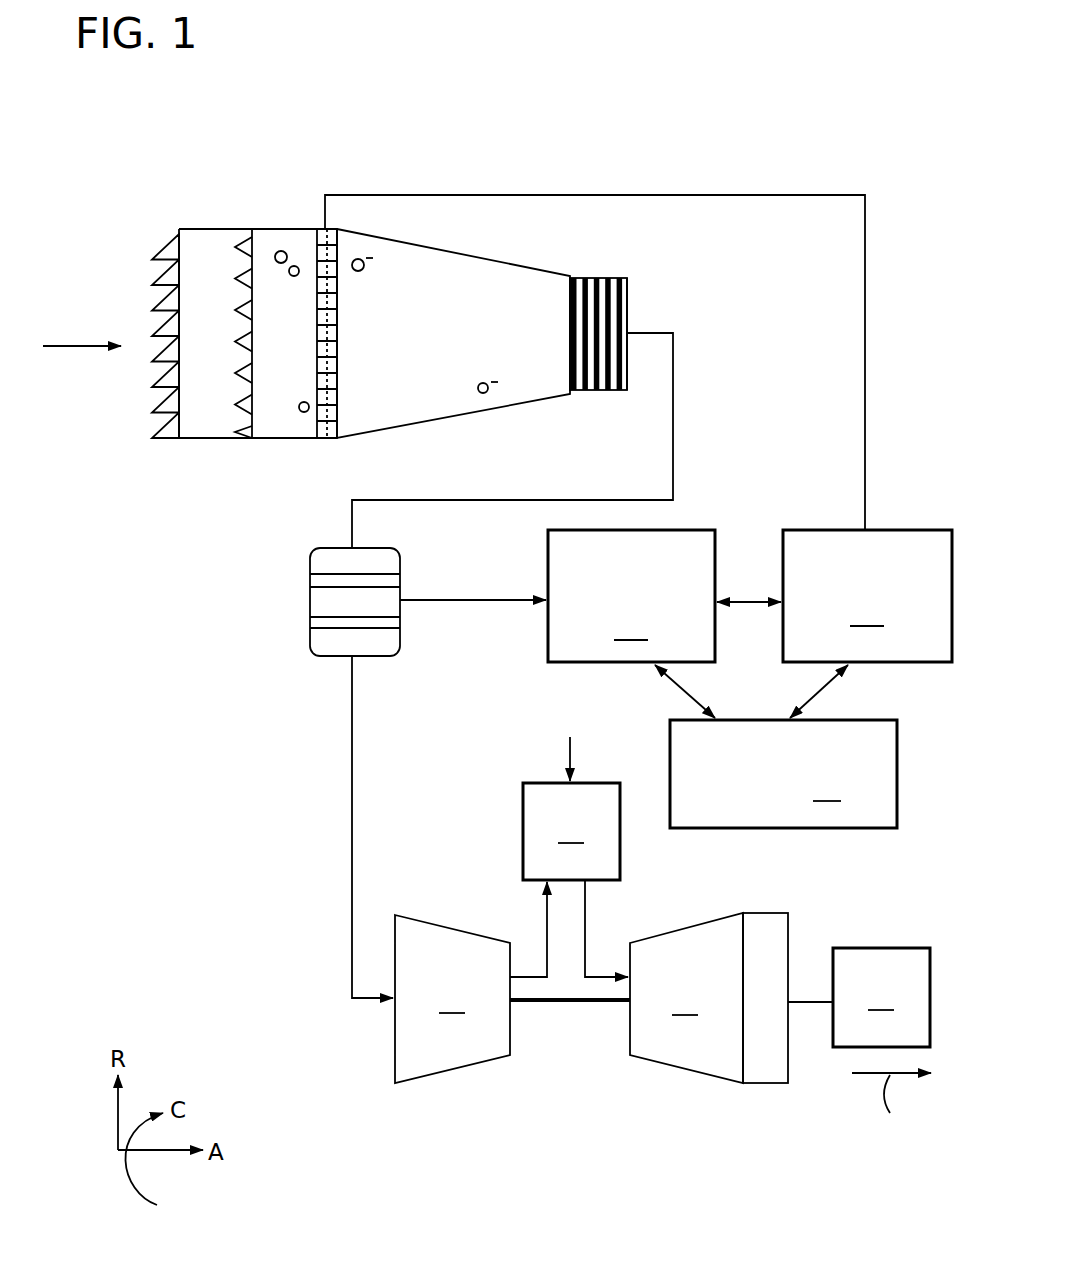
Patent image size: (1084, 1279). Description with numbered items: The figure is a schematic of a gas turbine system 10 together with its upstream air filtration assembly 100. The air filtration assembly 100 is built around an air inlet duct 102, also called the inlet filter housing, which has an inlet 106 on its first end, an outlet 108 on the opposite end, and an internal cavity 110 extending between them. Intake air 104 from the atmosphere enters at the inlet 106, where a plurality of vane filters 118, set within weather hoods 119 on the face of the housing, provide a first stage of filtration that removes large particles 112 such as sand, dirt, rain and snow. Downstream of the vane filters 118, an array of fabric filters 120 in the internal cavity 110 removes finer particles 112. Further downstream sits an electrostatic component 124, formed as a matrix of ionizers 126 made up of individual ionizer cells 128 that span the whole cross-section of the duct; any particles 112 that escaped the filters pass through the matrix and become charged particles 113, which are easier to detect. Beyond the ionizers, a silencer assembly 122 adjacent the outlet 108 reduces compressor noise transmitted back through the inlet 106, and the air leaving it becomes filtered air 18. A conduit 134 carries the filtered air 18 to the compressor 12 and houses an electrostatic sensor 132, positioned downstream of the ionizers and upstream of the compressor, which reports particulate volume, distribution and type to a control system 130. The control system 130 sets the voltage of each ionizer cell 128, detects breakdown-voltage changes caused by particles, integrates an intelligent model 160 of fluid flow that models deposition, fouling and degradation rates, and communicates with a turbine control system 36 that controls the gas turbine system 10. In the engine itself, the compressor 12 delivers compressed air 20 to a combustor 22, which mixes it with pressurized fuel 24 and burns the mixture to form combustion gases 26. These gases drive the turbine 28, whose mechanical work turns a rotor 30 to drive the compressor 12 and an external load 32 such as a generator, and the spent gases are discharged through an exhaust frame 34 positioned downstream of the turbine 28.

The air filtration assembly 100 is at (473, 100).
The air inlet duct 102 is at (220, 229).
The intake air 104 is at (73, 347).
The inlet 106 is at (141, 270).
The outlet 108 is at (639, 304).
The internal cavity 110 is at (473, 351).
The particles 112 is at (280, 251).
The charged particles 113 is at (359, 259).
The vane filters 118 is at (167, 438).
The weather hoods 119 is at (157, 307).
The array of fabric filters 120 is at (243, 437).
The silencer assembly 122 is at (613, 277).
The electrostatic component 124 is at (394, 359).
The matrix of ionizers 126 is at (394, 359).
The ionizer cells 128 is at (320, 438).
The control system 130 is at (867, 624).
The electrostatic sensor 132 is at (310, 625).
The intelligent model 160 is at (664, 624).
The turbine control system 36 is at (783, 774).
The gas turbine system 10 is at (892, 912).
The compressor 12 is at (452, 999).
The filtered air 18 is at (310, 827).
The conduit 134 is at (352, 937).
The compressed air 20 is at (545, 937).
The combustor 22 is at (571, 831).
The fuel 24 is at (570, 750).
The combustion gases 26 is at (587, 938).
The turbine 28 is at (686, 998).
The rotor 30 is at (570, 1004).
The external load 32 is at (859, 997).
The exhaust frame 34 is at (762, 1085).